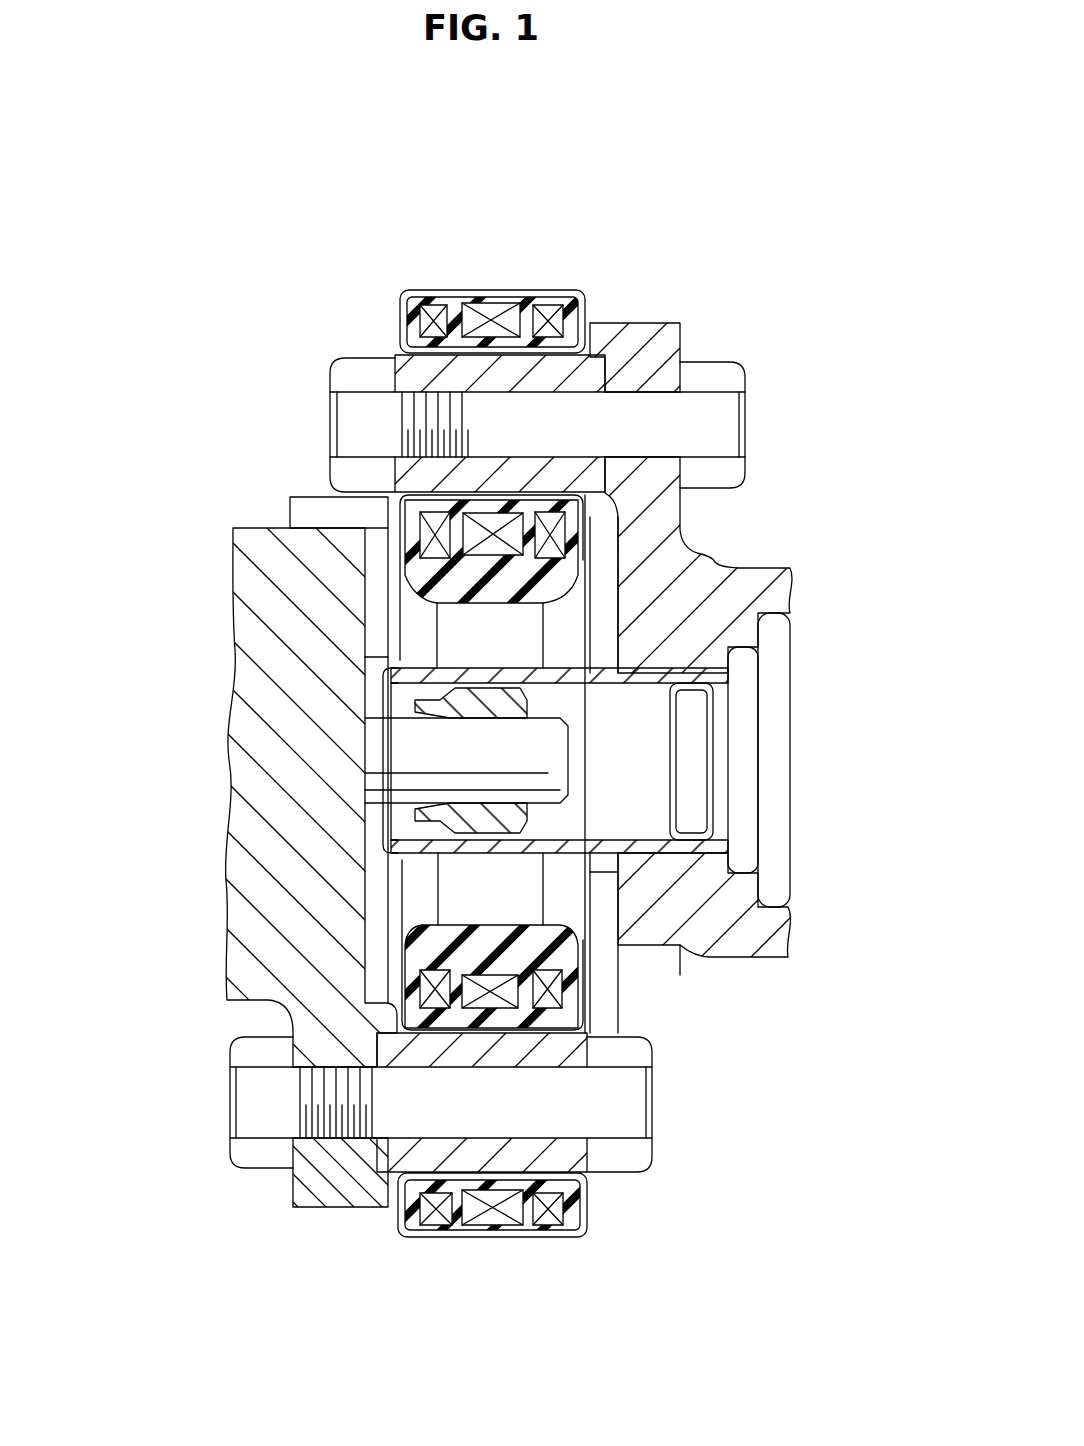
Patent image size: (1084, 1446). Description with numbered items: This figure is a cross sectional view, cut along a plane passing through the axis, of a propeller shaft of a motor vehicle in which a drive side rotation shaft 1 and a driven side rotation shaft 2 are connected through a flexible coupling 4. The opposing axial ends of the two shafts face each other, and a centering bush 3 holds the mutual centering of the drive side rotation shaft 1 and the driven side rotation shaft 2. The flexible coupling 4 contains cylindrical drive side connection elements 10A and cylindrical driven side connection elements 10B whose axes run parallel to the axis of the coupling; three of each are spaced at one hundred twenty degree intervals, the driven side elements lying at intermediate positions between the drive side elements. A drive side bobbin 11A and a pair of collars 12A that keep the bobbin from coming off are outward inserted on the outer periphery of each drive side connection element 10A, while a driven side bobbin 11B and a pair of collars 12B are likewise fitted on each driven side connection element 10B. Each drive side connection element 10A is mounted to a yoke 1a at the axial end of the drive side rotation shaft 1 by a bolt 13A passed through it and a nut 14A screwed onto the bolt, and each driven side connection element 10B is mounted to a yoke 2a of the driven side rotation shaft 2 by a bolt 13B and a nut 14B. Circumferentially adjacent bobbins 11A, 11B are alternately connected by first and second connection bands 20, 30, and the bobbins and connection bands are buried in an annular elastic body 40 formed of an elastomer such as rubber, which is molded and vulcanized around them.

The drive side rotation shaft 1 is at (242, 680).
The yoke 1a is at (320, 1192).
The driven side rotation shaft 2 is at (765, 942).
The yoke 2a is at (636, 346).
The centering bush 3 is at (604, 660).
The flexible coupling 4 is at (601, 302).
The drive side connection element 10A is at (590, 1182).
The driven side connection element 10B is at (418, 372).
The drive side bobbin 11A is at (543, 1070).
The driven side bobbin 11B is at (430, 450).
The collar 12A is at (400, 1012).
The collar 12B is at (385, 512).
The bolt 13A is at (632, 1117).
The bolt 13B is at (727, 423).
The nut 14A is at (258, 1157).
The nut 14B is at (355, 368).
The first connection band 20 is at (493, 305).
The second connection band 30 is at (437, 300).
The annular elastic body 40 is at (445, 934).